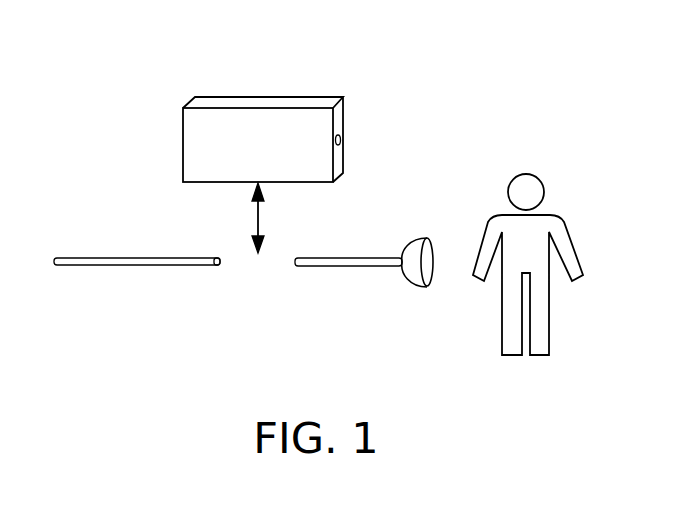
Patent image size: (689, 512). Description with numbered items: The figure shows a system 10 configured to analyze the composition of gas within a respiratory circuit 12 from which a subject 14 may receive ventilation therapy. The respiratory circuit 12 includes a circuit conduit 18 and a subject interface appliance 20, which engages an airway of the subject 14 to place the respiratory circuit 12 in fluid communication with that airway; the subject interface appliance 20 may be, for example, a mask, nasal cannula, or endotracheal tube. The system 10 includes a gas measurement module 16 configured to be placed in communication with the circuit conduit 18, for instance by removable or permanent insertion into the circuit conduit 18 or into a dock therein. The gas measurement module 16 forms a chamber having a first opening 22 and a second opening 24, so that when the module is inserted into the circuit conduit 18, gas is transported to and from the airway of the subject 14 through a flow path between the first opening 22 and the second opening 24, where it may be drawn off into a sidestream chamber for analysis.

The system 10 is at (431, 125).
The respiratory circuit 12 is at (388, 332).
The subject 14 is at (528, 178).
The gas measurement module 16 is at (264, 98).
The circuit conduit 18 is at (183, 267).
The subject interface appliance 20 is at (415, 248).
The first opening 22 is at (343, 140).
The second opening 24 is at (183, 147).